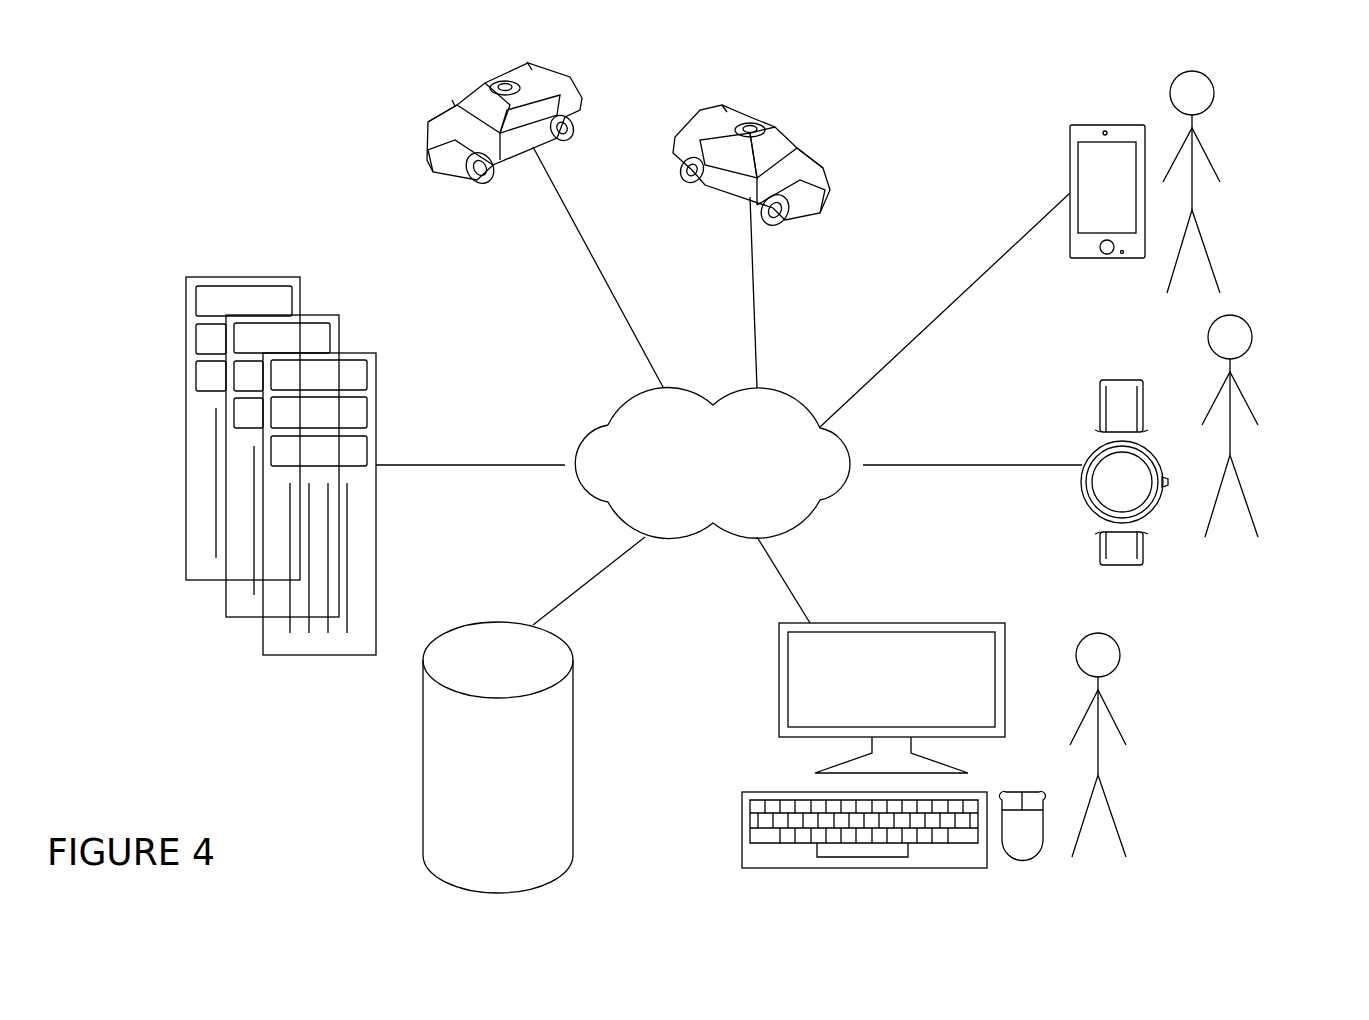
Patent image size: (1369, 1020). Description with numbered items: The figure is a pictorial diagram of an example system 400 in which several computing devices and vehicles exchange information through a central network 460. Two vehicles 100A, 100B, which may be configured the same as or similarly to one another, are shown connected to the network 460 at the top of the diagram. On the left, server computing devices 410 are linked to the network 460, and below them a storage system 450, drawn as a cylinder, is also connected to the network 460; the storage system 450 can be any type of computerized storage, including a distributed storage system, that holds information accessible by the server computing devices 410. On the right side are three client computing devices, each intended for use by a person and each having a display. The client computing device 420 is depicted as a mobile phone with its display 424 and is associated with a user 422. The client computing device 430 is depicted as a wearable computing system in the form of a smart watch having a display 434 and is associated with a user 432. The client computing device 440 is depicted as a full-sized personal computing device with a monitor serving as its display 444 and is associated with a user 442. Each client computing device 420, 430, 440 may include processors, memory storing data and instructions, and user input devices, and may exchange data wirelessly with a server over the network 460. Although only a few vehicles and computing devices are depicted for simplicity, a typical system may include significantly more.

The system 400 is at (152, 807).
The vehicle 100A is at (425, 152).
The vehicle 100B is at (845, 172).
The server computing devices 410 is at (376, 401).
The client computing device 420 is at (1056, 204).
The user 422 is at (1196, 197).
The display 424 is at (1070, 125).
The client computing device 430 is at (1082, 484).
The user 432 is at (1234, 440).
The display 434 is at (1163, 493).
The client computing device 440 is at (921, 707).
The user 442 is at (1102, 755).
The display 444 is at (995, 650).
The storage system 450 is at (575, 765).
The network 460 is at (570, 493).